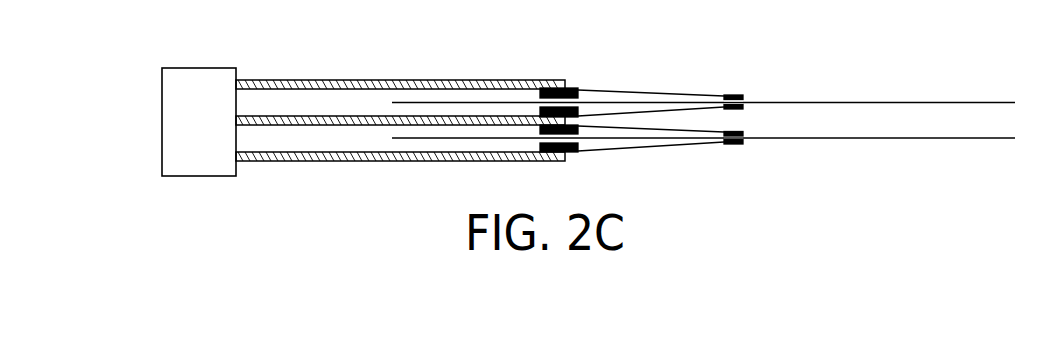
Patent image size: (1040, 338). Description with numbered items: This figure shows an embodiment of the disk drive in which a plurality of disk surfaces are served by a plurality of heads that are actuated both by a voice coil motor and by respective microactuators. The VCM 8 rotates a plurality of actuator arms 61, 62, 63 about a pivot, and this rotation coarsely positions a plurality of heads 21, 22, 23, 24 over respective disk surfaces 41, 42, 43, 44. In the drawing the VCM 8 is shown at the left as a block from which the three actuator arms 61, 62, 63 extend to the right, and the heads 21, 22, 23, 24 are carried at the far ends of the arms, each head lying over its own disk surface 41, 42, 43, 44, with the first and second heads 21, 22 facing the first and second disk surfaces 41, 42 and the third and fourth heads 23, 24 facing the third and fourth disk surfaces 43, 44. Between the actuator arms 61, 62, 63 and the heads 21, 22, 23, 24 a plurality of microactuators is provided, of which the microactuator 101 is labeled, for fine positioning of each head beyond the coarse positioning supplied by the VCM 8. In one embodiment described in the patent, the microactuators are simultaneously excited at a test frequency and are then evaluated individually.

The VCM 8 is at (200, 70).
The actuator arm 61 is at (296, 80).
The actuator arm 62 is at (337, 117).
The actuator arm 63 is at (377, 160).
The microactuator 101 is at (575, 88).
The head 21 is at (731, 94).
The head 22 is at (724, 102).
The head 23 is at (724, 138).
The head 24 is at (737, 146).
The disk surface 41 is at (898, 102).
The disk surface 42 is at (940, 103).
The disk surface 43 is at (943, 138).
The disk surface 44 is at (945, 138).